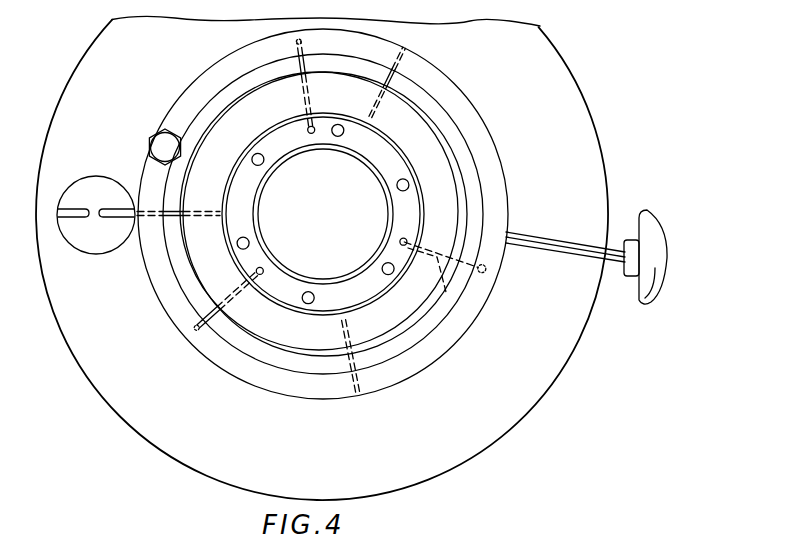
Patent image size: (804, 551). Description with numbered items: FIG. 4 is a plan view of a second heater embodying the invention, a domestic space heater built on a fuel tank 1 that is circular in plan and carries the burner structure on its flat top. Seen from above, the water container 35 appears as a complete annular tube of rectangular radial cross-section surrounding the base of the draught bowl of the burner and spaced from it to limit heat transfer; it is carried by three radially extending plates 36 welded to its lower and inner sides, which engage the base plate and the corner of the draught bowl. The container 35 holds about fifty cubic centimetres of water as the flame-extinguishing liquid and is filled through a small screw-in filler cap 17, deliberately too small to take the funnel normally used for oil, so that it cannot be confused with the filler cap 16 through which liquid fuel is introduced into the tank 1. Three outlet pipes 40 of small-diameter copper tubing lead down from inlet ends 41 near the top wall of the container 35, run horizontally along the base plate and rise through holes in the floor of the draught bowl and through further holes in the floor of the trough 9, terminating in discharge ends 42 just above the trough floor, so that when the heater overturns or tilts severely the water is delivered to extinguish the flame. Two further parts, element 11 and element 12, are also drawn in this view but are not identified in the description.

The fuel tank 1 is at (570, 104).
The trough 9 is at (404, 200).
The shaft 11 is at (550, 243).
The knob 12 is at (640, 276).
The filler cap 16 is at (97, 239).
The filler cap 17 is at (162, 146).
The container 35 is at (482, 138).
The radially extending plates 36 is at (392, 78).
The outlet pipes 40 is at (444, 292).
The inlet ends 41 is at (486, 271).
The discharge ends 42 is at (404, 246).